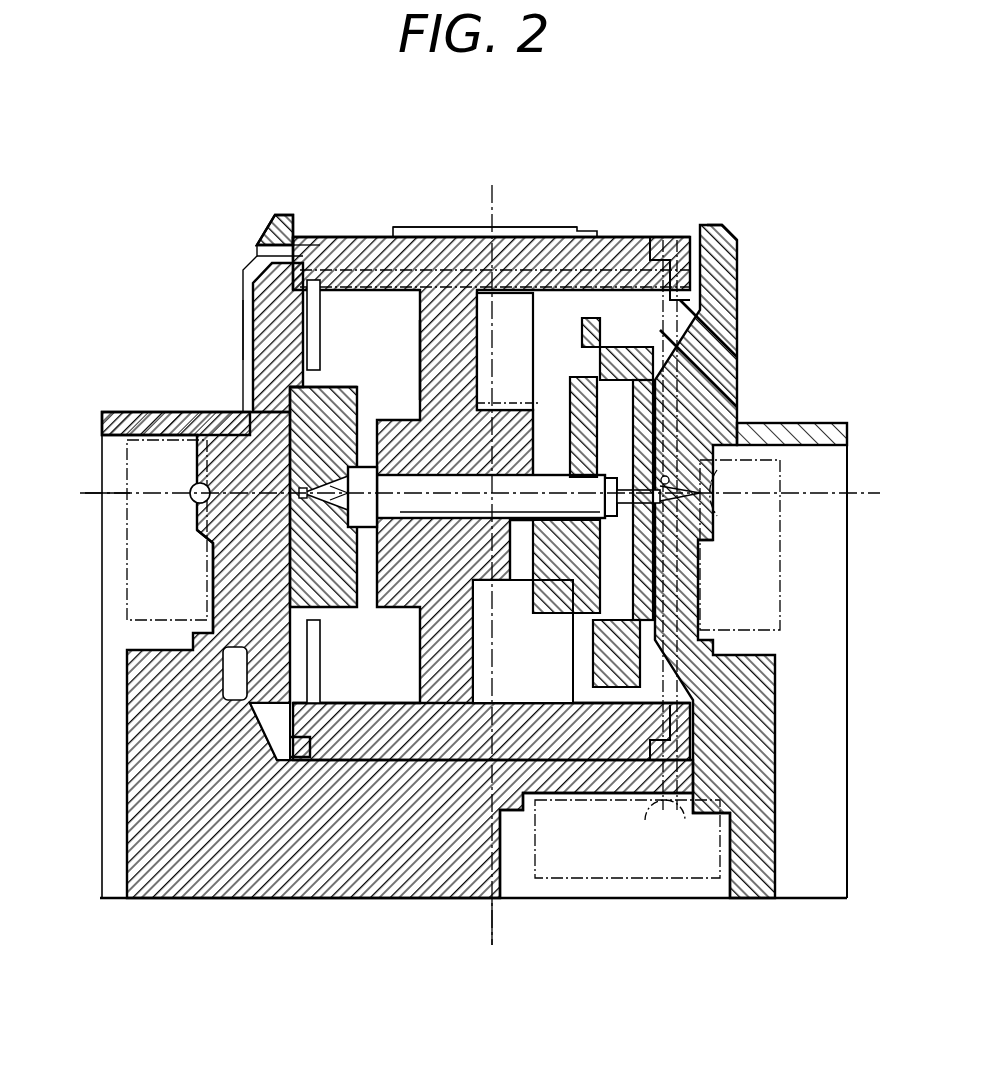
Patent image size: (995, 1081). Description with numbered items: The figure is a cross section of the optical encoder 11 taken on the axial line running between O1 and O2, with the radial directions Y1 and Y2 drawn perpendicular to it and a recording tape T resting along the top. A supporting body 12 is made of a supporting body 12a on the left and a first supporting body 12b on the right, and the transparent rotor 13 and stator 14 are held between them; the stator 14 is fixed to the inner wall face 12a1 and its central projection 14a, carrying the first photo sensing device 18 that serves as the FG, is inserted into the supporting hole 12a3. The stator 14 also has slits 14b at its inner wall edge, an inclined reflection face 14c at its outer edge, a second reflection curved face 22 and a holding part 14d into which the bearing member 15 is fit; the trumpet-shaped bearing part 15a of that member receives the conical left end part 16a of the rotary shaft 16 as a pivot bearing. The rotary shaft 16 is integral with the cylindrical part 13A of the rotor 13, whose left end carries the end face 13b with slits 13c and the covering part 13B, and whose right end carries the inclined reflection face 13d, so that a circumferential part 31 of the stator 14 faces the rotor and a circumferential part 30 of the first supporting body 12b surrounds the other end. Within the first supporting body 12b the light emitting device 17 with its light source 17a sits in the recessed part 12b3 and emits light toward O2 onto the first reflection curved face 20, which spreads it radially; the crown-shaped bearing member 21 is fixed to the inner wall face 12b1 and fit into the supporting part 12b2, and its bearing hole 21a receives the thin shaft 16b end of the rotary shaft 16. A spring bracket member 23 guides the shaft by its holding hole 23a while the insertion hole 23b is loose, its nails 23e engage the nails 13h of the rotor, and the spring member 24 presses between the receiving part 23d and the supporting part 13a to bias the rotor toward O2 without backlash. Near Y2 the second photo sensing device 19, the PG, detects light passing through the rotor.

The optical encoder 11 is at (650, 188).
The supporting body 12 is at (475, 610).
The supporting body on the left side 12a is at (430, 900).
The inner wall face 12a1 is at (262, 333).
The supporting hole 12a3 is at (220, 447).
The first supporting body 12b is at (574, 590).
The inner wall face 12b1 is at (673, 337).
The supporting part 12b2 is at (606, 237).
The recessed part 12b3 is at (717, 517).
The rotor 13 is at (540, 559).
The cylindrical part 13A is at (555, 237).
The covering part 13B is at (303, 237).
The supporting part 13a is at (432, 362).
The end face 13b is at (340, 237).
The slits 13c is at (312, 285).
The reflection face 13d is at (690, 240).
The nails 13h is at (523, 641).
The stator 14 is at (202, 564).
The projection 14a is at (168, 415).
The slits 14b is at (310, 237).
The reflection face 14c is at (270, 260).
The holding part 14d is at (290, 600).
The bearing member 15 is at (354, 520).
The bearing part 15a is at (340, 585).
The rotary shaft 16 is at (577, 480).
The left end part 16a is at (353, 480).
The thin shaft 16b is at (660, 398).
The light emitting device 17 is at (780, 598).
The light source 17a is at (705, 543).
The first photo sensing device (FG) 18 is at (115, 595).
The second photo sensing device (PG) 19 is at (598, 870).
The first reflection curved face 20 is at (737, 422).
The bearing member 21 is at (691, 403).
The bearing hole 21a is at (717, 493).
The second reflection curved face 22 is at (190, 488).
The spring bracket member 23 is at (635, 506).
The holding hole 23a is at (520, 415).
The insertion hole 23b is at (660, 560).
The receiving part 23d is at (665, 605).
The nails 23e is at (505, 560).
The spring member 24 is at (505, 415).
The circumferential part 30 is at (730, 240).
The circumferential part 31 is at (263, 240).
The frequency generator FG is at (130, 538).
The axial line end O1 is at (503, 494).
The axial line end O2 is at (86, 488).
The recording tape T is at (430, 227).
The direction Y1 is at (497, 550).
The direction Y2 is at (490, 936).